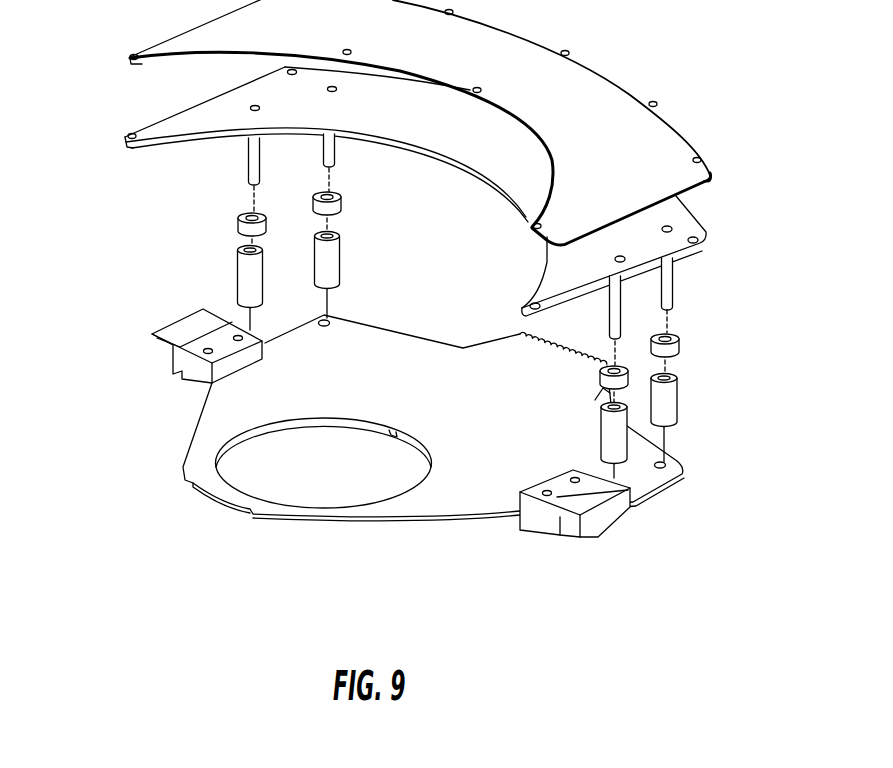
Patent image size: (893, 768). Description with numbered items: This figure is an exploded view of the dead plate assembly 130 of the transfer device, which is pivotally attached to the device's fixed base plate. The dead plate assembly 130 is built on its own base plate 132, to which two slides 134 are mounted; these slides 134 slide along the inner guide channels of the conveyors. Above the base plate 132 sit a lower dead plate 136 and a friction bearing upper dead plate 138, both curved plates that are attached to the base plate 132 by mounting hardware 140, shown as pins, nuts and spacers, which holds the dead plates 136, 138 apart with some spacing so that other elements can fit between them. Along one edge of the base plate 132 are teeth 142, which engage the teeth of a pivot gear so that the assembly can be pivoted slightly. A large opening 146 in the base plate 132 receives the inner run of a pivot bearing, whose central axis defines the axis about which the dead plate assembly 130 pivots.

The dead plate assembly 130 is at (757, 272).
The base plate 132 is at (192, 480).
The slides 134 is at (155, 331).
The lower dead plate 136 is at (124, 137).
The friction bearing upper dead plate 138 is at (128, 57).
The mounting hardware 140 is at (683, 267).
The teeth 142 is at (530, 328).
The opening 146 is at (284, 502).